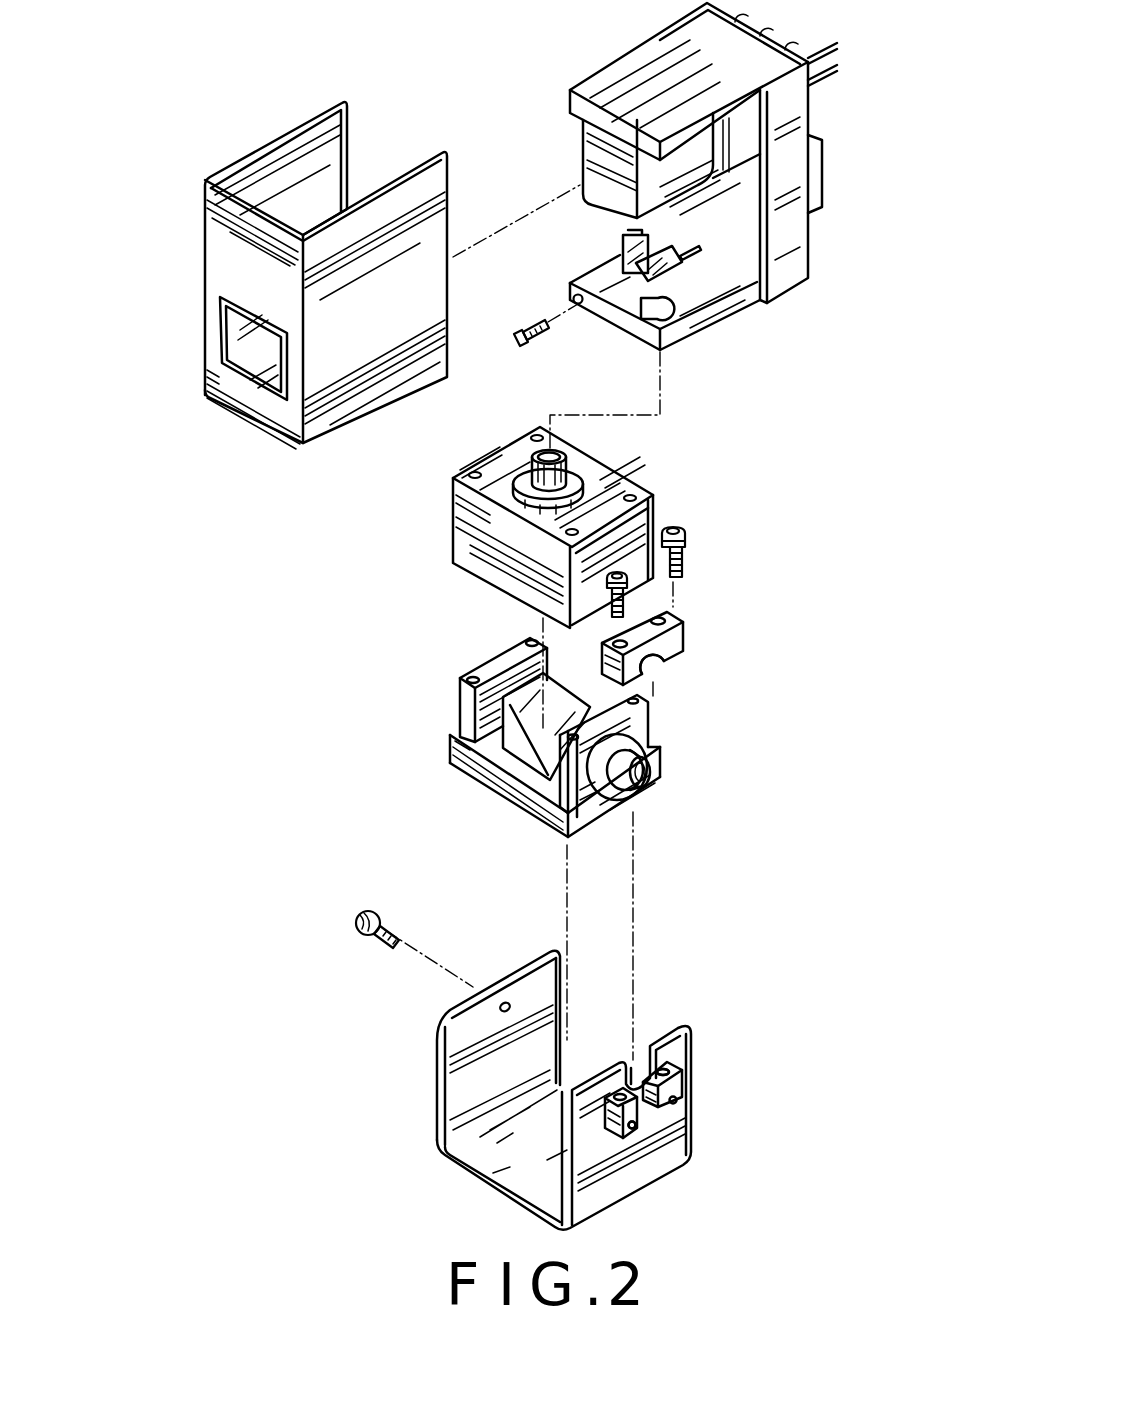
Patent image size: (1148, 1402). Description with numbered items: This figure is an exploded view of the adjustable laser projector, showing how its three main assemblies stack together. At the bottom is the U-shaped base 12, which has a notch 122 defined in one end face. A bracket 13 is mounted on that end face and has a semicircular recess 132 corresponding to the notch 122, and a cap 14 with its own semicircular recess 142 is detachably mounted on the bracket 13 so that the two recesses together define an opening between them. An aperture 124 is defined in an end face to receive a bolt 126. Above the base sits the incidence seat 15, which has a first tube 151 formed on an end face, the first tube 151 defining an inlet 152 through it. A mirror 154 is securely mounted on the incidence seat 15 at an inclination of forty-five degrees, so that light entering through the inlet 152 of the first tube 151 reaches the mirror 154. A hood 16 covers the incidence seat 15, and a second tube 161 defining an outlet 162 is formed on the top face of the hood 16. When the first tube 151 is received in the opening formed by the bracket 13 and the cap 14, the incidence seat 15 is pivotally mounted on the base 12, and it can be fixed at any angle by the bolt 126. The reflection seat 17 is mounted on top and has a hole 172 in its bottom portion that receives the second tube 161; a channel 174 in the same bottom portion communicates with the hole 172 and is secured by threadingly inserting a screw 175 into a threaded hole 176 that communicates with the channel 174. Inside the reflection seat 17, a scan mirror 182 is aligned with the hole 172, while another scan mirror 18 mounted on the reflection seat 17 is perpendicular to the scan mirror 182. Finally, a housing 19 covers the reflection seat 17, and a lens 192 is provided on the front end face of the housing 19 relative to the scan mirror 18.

The base 12 is at (470, 1097).
The bracket 13 is at (637, 1123).
The cap 14 is at (677, 647).
The incidence seat 15 is at (455, 768).
The hood 16 is at (487, 563).
The reflection seat 17 is at (662, 60).
The scan mirror 18 is at (615, 242).
The housing 19 is at (289, 149).
The notch 122 is at (647, 1103).
The aperture 124 is at (513, 1007).
The bolt 126 is at (376, 943).
The semicircular recess 132 is at (672, 1094).
The semicircular recess 142 is at (658, 663).
The first tube 151 is at (618, 785).
The inlet 152 is at (642, 785).
The mirror 154 is at (520, 723).
The second tube 161 is at (518, 484).
The outlet 162 is at (565, 458).
The hole 172 is at (667, 317).
The channel 174 is at (605, 280).
The screw 175 is at (525, 337).
The threaded hole 176 is at (580, 305).
The scan mirror 182 is at (652, 272).
The lens 192 is at (247, 362).